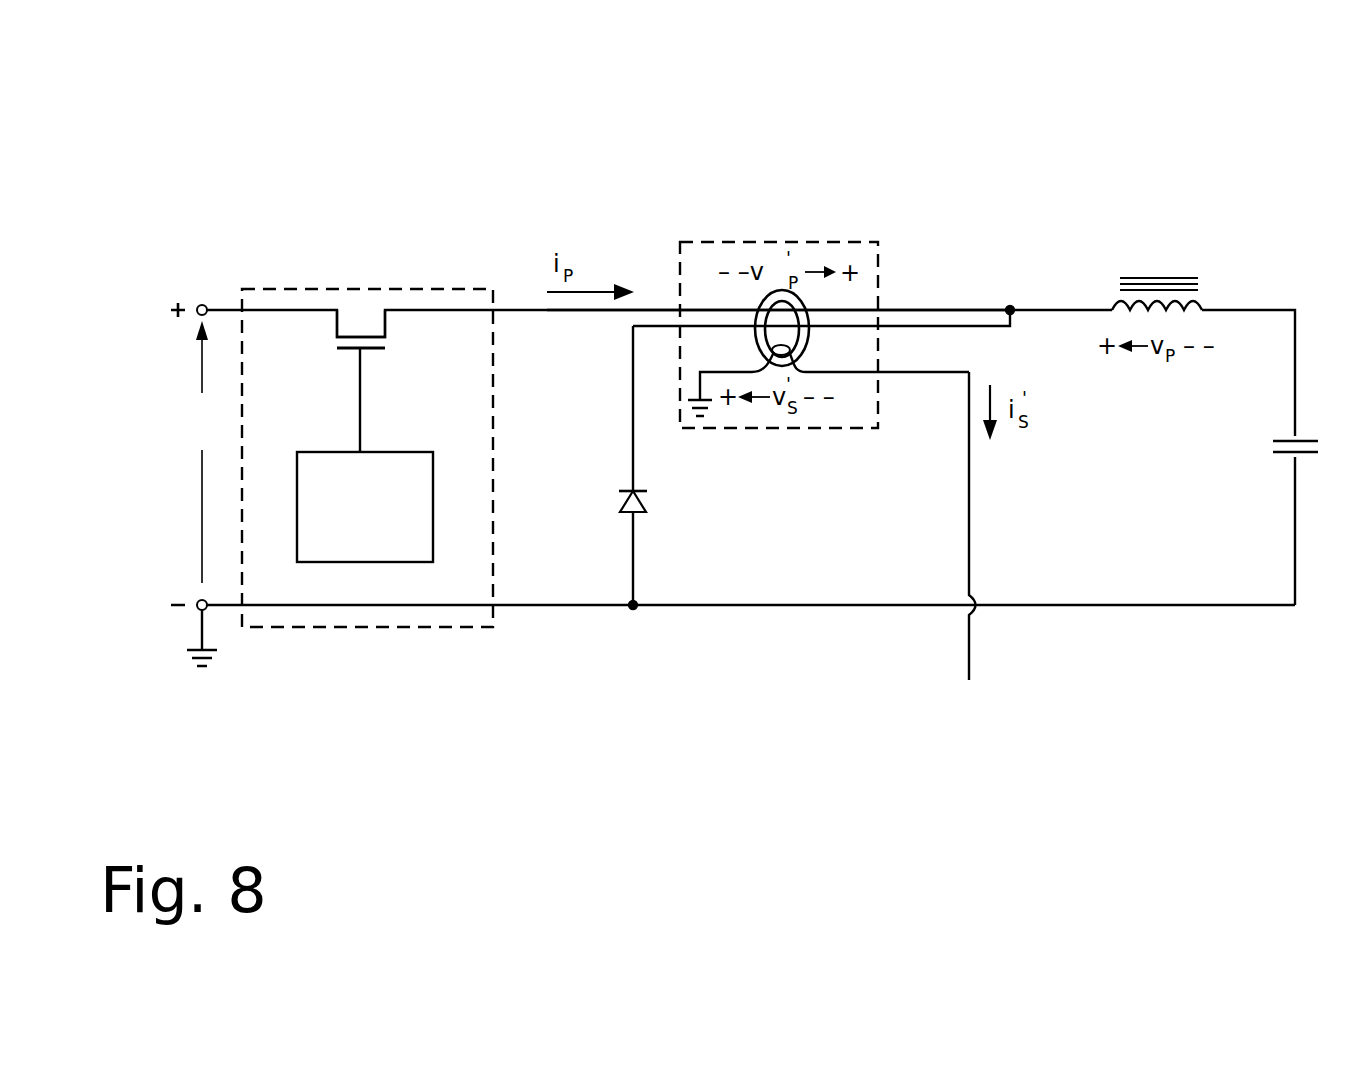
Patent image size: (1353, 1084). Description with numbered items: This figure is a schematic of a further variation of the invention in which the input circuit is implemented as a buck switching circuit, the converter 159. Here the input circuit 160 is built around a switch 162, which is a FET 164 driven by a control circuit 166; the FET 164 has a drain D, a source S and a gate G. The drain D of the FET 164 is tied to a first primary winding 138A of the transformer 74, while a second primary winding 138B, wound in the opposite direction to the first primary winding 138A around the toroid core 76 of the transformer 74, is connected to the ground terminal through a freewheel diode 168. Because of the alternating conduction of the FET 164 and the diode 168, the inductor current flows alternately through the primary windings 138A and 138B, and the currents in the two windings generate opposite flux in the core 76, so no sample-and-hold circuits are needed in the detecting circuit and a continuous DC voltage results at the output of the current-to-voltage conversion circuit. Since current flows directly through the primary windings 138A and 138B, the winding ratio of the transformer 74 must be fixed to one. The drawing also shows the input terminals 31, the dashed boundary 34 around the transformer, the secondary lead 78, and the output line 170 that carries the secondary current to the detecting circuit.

The input terminals 31 is at (176, 338).
The input circuit 160 is at (421, 275).
The switch 162 is at (420, 342).
The FET 164 is at (338, 349).
The control circuit 166 is at (395, 519).
The freewheel diode 168 is at (648, 502).
The current transformer 34 is at (772, 452).
The first primary winding 138A is at (752, 309).
The second primary winding 138B is at (852, 327).
The transformer 74 is at (862, 292).
The secondary winding ground lead 78 is at (765, 363).
The toroid core 76 is at (812, 333).
The output line to detecting circuit 170 is at (970, 530).
The buck switching circuit 159 is at (916, 156).